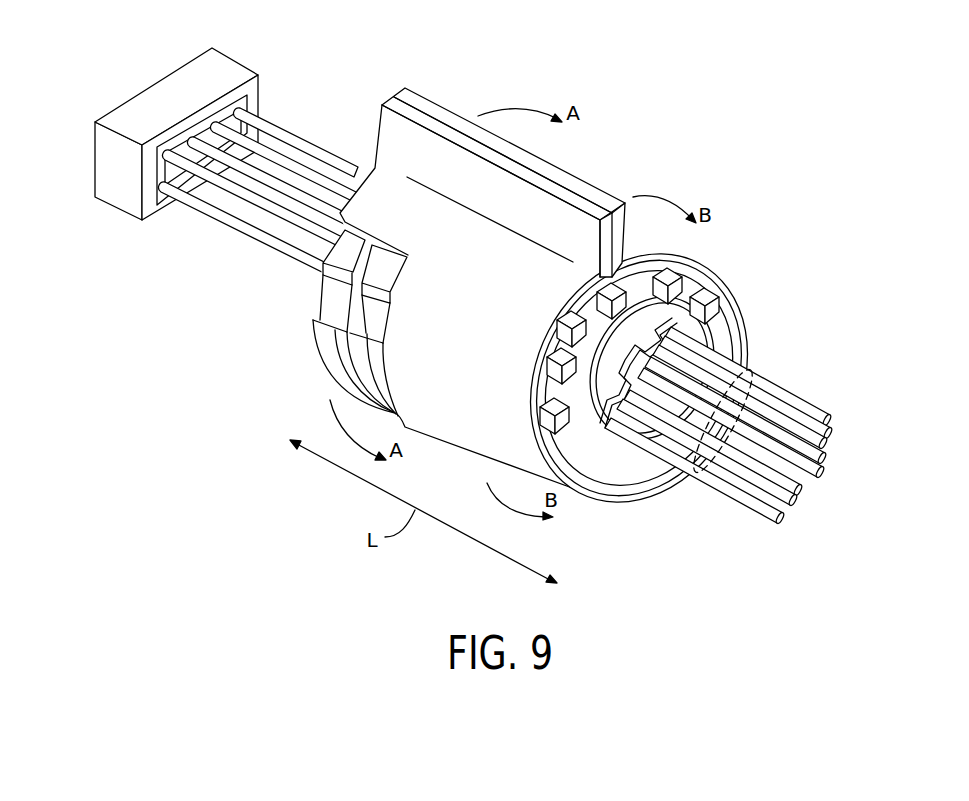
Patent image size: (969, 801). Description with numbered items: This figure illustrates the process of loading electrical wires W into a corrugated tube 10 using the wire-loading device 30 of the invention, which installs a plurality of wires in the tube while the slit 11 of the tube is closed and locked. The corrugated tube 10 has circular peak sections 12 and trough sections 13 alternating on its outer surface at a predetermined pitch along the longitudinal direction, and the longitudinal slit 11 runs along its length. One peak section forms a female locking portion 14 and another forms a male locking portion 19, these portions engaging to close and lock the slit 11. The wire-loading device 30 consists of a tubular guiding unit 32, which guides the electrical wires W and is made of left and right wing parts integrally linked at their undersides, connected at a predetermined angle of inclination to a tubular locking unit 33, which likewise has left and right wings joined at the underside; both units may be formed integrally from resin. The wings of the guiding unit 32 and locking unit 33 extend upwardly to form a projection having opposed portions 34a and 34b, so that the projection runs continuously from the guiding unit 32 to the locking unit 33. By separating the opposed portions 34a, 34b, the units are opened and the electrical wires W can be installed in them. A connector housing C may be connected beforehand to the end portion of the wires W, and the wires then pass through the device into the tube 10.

The corrugated tube 10 is at (748, 302).
The slit 11 is at (620, 295).
The peak sections 12 is at (600, 478).
The trough sections 13 is at (575, 481).
The female locking portion 14 is at (684, 480).
The male locking portion 19 is at (688, 336).
The wire-loading device 30 is at (606, 191).
The tubular guiding unit 32 is at (398, 212).
The tubular locking unit 33 is at (470, 455).
The opposed portion 34a is at (550, 170).
The opposed portion 34b is at (390, 133).
The connector housing C is at (225, 72).
The electrical wires W is at (248, 238).